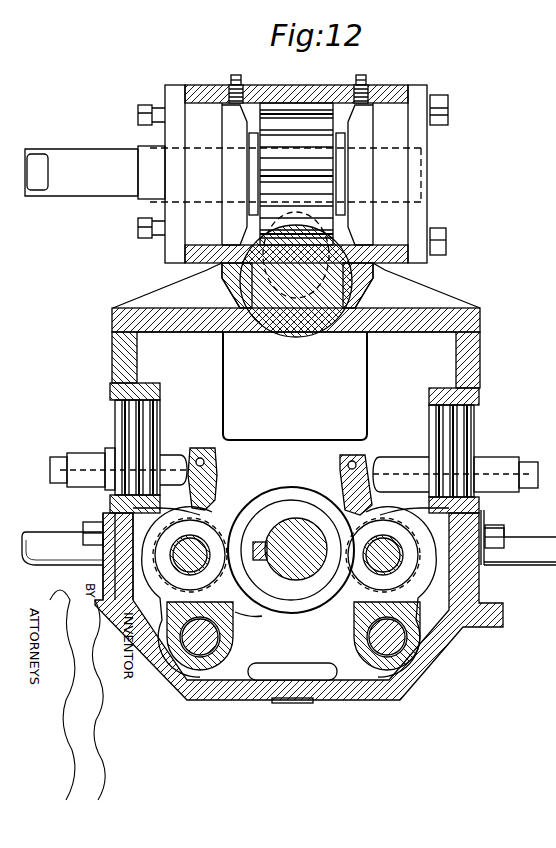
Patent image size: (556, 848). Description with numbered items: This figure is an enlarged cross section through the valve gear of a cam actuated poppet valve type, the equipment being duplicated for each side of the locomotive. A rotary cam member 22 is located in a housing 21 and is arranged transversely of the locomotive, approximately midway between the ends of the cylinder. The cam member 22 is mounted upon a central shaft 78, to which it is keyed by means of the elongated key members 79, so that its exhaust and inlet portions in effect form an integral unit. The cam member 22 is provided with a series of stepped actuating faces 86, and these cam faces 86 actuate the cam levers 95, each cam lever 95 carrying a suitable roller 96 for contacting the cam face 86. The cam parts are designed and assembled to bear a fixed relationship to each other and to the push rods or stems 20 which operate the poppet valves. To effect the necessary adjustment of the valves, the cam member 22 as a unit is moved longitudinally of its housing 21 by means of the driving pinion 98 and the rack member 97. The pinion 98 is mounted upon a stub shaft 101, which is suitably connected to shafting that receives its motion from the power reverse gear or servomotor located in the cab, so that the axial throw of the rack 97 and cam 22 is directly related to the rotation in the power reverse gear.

The driving pinion 98 is at (279, 120).
The stub shaft 101 is at (83, 158).
The rack member 97 is at (343, 238).
The housing 21 is at (352, 697).
The push rod 20 is at (78, 462).
The cam lever 95 is at (362, 458).
The cam member 22 is at (259, 481).
The stepped actuating face 86 is at (297, 618).
The central shaft 78 is at (292, 530).
The elongated key member 79 is at (257, 562).
The roller 96 is at (178, 531).